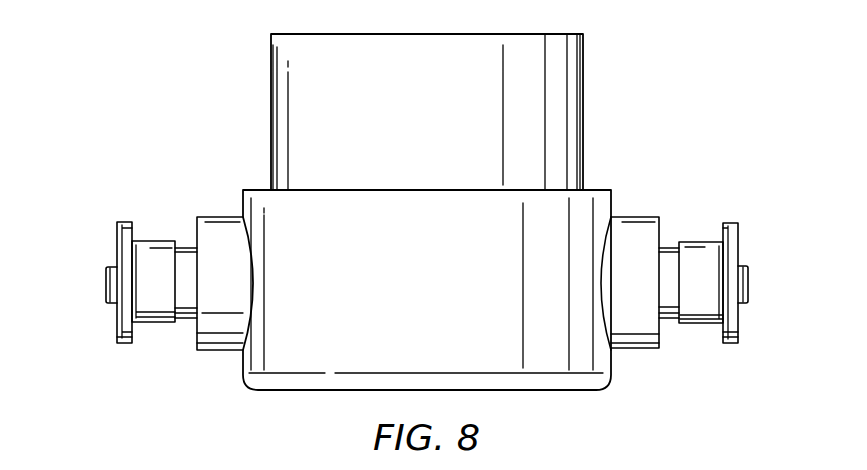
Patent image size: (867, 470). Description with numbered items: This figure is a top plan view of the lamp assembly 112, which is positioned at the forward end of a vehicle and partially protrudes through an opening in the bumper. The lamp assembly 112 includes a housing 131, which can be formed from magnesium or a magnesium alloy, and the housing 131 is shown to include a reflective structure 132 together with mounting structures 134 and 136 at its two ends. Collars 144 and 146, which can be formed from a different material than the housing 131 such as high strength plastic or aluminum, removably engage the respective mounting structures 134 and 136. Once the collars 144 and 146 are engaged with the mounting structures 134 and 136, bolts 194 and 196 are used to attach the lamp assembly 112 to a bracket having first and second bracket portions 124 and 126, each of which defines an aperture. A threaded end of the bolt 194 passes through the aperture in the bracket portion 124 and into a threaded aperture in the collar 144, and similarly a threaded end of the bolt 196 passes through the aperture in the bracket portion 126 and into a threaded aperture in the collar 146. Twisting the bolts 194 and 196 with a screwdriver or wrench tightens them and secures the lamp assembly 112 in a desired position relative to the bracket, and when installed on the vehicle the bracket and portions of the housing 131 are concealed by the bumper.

The lamp assembly 112 is at (630, 138).
The housing 131 is at (589, 80).
The reflective structure 132 is at (448, 293).
The mounting structure 134 is at (183, 322).
The mounting structure 136 is at (667, 320).
The collar 144 is at (153, 241).
The collar 146 is at (700, 242).
The first bracket portion 124 is at (126, 223).
The second bracket portion 126 is at (746, 203).
The bolt 194 is at (105, 295).
The bolt 196 is at (750, 293).